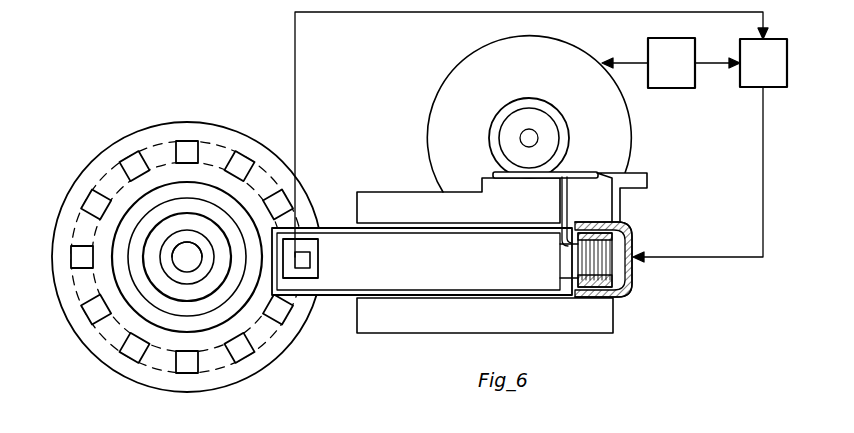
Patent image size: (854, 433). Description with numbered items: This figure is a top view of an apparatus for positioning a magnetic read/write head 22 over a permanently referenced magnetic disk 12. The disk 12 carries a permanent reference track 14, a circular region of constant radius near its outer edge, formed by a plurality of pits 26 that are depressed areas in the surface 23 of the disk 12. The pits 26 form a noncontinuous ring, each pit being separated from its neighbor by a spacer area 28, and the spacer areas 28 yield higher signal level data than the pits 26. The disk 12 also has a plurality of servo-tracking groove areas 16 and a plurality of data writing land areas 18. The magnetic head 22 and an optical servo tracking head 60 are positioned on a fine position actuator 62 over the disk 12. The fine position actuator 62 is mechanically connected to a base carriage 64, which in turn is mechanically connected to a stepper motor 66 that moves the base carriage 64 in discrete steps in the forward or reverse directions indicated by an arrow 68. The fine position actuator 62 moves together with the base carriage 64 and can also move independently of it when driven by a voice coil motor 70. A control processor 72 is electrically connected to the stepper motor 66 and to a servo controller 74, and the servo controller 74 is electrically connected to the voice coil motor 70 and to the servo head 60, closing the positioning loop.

The permanently referenced magnetic disk 12 is at (78, 168).
The permanent reference track 14 is at (96, 336).
The servo-tracking (groove) areas 16 is at (183, 244).
The data writing (land) areas 18 is at (206, 264).
The magnetic read/write head 22 is at (314, 280).
The surface of the disk 23 is at (153, 201).
The pits 26 is at (238, 157).
The spacer area 28 is at (212, 360).
The optical servo tracking head 60 is at (305, 257).
The fine position actuator 62 is at (474, 271).
The base carriage 64 is at (534, 213).
The stepper motor 66 is at (629, 132).
The arrow 68 is at (398, 172).
The voice coil motor 70 is at (631, 249).
The control processor 72 is at (683, 75).
The servo controller 74 is at (775, 75).